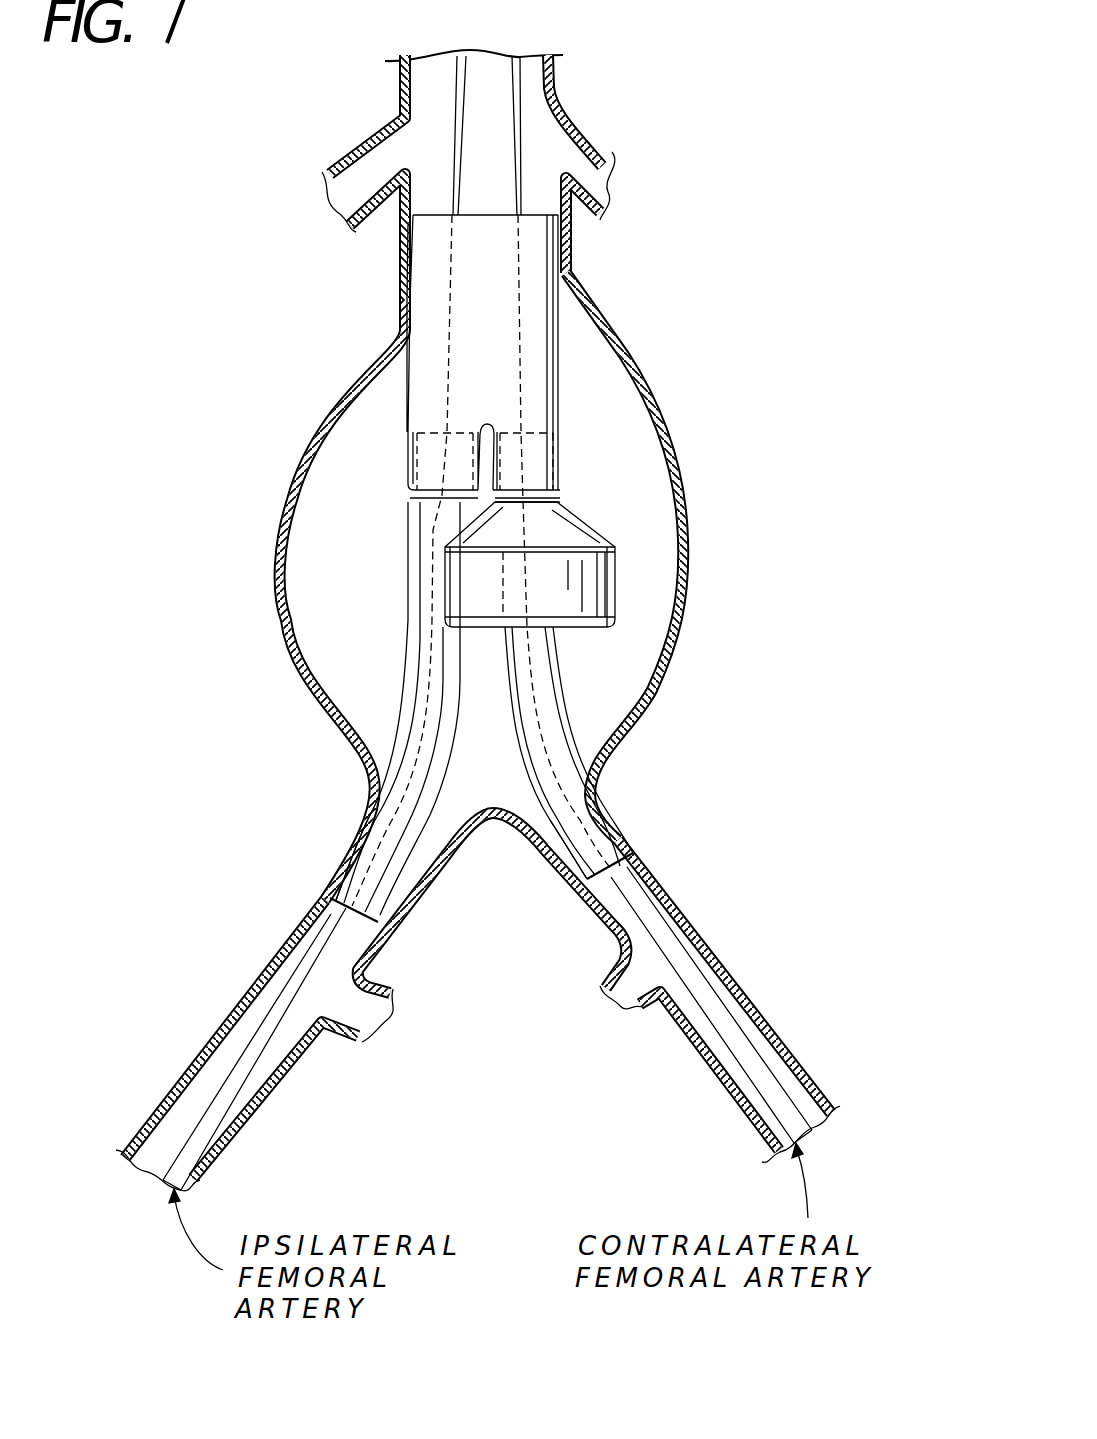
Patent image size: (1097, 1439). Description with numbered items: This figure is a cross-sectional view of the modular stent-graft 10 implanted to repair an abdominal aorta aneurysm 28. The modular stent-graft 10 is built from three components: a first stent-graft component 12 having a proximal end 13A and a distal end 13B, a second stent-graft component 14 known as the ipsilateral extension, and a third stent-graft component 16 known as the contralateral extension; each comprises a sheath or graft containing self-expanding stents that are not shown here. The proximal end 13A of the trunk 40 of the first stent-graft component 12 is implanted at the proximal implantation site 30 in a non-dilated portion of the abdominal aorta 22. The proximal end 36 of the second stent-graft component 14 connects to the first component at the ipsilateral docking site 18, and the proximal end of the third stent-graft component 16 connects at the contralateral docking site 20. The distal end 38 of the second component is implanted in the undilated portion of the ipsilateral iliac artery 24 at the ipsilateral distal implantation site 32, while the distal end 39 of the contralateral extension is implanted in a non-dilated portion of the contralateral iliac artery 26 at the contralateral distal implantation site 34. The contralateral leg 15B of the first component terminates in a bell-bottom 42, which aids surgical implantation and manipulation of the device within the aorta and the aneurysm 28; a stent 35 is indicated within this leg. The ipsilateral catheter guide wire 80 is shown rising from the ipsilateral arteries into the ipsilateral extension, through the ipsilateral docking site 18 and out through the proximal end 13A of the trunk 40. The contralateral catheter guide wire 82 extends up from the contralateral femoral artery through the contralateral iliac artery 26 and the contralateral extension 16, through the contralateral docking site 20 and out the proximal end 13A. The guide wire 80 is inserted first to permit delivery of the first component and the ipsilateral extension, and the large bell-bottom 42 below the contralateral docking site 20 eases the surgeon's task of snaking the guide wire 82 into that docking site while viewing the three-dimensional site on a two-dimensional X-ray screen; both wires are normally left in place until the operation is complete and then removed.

The modular stent-graft 10 is at (565, 340).
The first stent-graft component 12 is at (540, 257).
The proximal end 13A is at (440, 212).
The distal end 13B is at (440, 510).
The second stent-graft component 14 is at (420, 670).
The contralateral leg 15B is at (543, 484).
The third stent-graft component 16 is at (548, 702).
The ipsilateral docking site 18 is at (423, 473).
The contralateral docking site 20 is at (543, 467).
The abdominal aorta 22 is at (557, 85).
The ipsilateral iliac artery 24 is at (253, 1123).
The contralateral iliac artery 26 is at (723, 1083).
The abdominal aorta aneurysm 28 is at (635, 367).
The proximal implantation site 30 is at (400, 257).
The ipsilateral distal implantation site 32 is at (368, 850).
The contralateral distal implantation site 34 is at (620, 828).
The stent in second leg 35 is at (547, 423).
The proximal end 36 is at (433, 430).
The distal end 38 is at (322, 908).
The contralateral limb end attachment 39 is at (619, 866).
The trunk 40 is at (425, 366).
The bell-bottom 42 is at (617, 578).
The ipsilateral catheter guide wire 80 is at (224, 1080).
The contralateral catheter guide wire 82 is at (740, 1040).